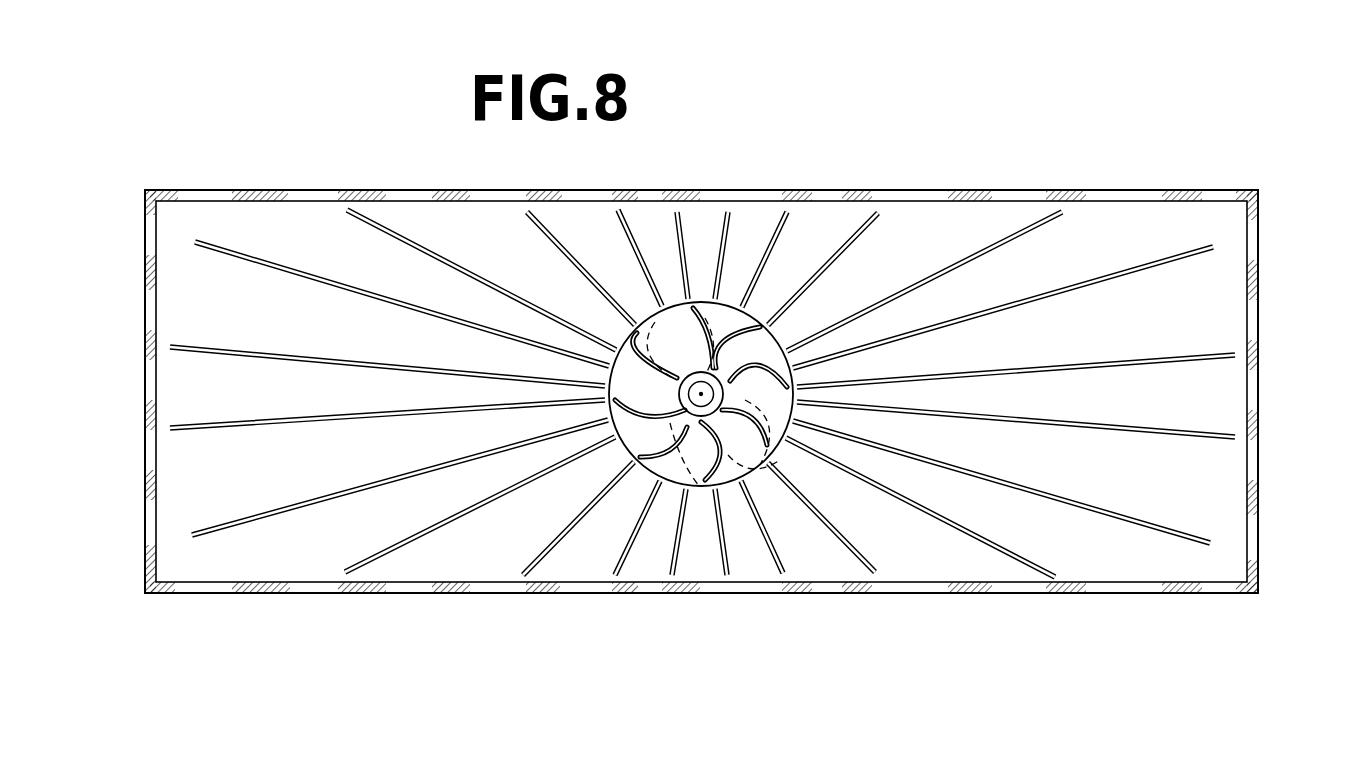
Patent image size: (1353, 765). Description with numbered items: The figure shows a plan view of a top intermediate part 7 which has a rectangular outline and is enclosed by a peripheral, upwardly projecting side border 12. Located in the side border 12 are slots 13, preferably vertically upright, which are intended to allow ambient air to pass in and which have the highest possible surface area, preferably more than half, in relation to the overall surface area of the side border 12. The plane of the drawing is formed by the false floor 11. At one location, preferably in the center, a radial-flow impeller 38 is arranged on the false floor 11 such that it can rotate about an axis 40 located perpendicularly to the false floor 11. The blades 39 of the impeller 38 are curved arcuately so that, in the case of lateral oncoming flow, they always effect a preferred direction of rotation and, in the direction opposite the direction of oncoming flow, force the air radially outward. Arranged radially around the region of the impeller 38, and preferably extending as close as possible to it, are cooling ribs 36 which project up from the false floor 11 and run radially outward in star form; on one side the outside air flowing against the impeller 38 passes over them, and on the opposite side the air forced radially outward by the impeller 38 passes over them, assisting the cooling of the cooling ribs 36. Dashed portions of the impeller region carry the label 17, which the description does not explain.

The top intermediate part 7 is at (258, 170).
The false floor 11 is at (1076, 537).
The side border 12 is at (1258, 287).
The slots 13 is at (1255, 470).
The hidden vane portions 17 is at (643, 308).
The cooling ribs 36 is at (455, 520).
The radial-flow impeller 38 is at (745, 467).
The blades 39 is at (768, 325).
The axis 40 is at (704, 399).